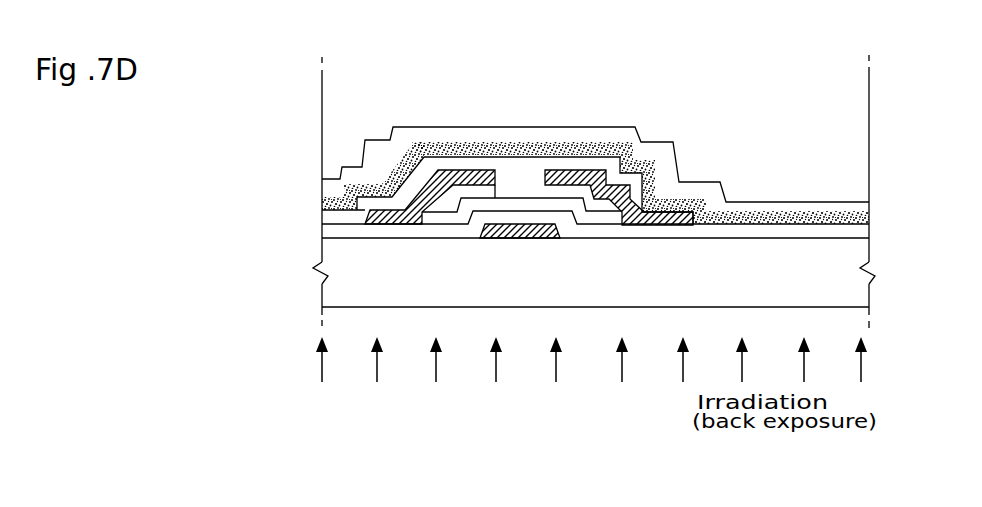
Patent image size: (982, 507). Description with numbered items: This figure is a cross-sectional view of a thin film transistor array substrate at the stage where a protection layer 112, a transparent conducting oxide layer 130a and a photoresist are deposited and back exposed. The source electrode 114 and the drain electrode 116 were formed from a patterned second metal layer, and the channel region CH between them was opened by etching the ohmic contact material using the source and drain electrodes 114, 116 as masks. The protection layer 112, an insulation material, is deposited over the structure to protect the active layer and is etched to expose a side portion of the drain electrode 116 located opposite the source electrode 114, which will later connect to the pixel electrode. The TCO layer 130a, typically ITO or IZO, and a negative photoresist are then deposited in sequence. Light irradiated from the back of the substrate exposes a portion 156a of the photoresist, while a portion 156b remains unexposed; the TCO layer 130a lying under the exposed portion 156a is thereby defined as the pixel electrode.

The protection layer 112 is at (611, 165).
The source electrode 114 is at (468, 170).
The drain electrode 116 is at (640, 183).
The Transparent Conducting Oxide (TCO) layer 130a is at (738, 222).
The exposed portion of the photoresist 156a is at (343, 167).
The unexposed portion of the photoresist 156b is at (548, 130).
The channel region CH is at (521, 168).